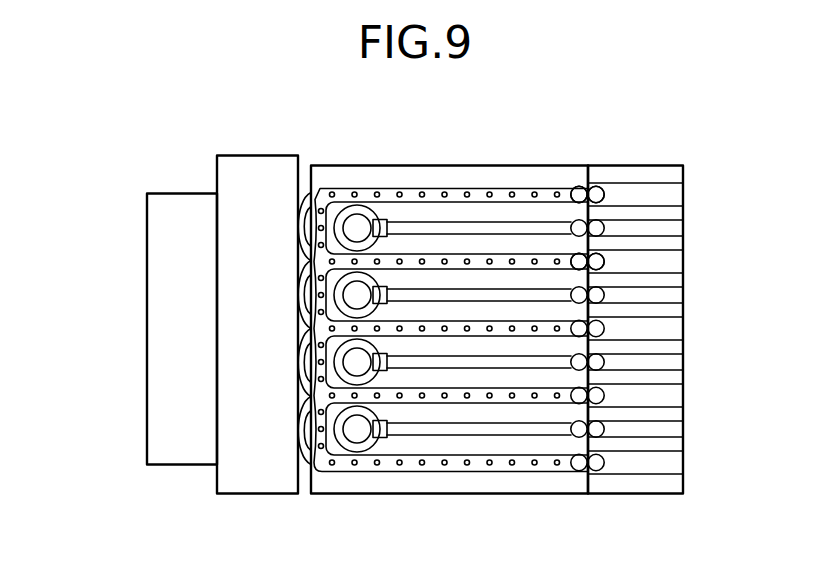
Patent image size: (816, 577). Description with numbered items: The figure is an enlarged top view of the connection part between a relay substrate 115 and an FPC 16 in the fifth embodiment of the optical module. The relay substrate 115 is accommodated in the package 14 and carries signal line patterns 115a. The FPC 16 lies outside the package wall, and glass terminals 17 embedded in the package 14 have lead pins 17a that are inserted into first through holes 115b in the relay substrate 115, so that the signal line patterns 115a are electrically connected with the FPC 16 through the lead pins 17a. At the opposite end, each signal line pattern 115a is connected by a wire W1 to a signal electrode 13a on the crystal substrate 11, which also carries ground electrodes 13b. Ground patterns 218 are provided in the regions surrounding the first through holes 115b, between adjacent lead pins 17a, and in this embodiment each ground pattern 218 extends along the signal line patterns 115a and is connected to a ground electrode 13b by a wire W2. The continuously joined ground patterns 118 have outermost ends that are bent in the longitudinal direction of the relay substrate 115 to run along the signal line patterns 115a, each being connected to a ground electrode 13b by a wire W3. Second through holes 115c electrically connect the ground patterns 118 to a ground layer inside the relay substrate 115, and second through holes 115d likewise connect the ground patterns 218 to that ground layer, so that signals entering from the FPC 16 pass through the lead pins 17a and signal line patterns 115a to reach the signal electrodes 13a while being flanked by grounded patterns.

The crystal substrate 11 is at (636, 494).
The signal electrode 13a is at (673, 228).
The ground electrode 13b is at (673, 195).
The package 14 is at (258, 494).
The FPC 16 is at (186, 466).
The glass terminal 17 is at (305, 227).
The lead pin 17a is at (353, 222).
The relay substrate 115 is at (449, 494).
The signal line pattern 115a is at (512, 228).
The first through hole 115b is at (374, 216).
The second through hole 115c is at (310, 308).
The second through hole 115d is at (320, 294).
The ground pattern 118 is at (320, 194).
The ground pattern 218 is at (303, 245).
The wire W1 is at (604, 225).
The wire W2 is at (605, 261).
The wire W3 is at (604, 196).